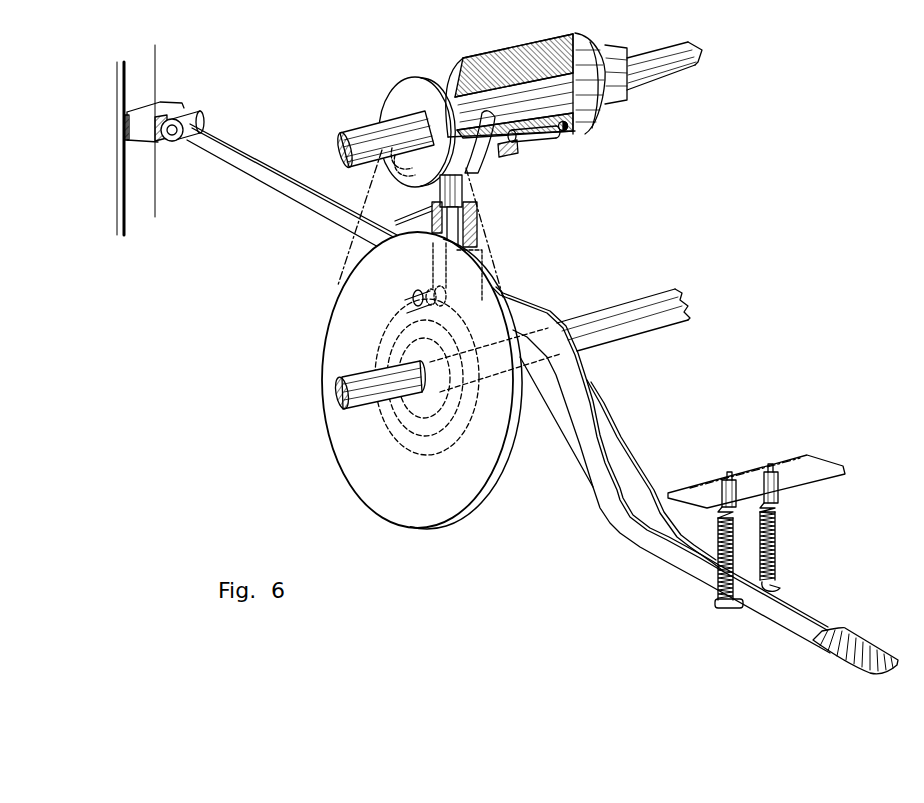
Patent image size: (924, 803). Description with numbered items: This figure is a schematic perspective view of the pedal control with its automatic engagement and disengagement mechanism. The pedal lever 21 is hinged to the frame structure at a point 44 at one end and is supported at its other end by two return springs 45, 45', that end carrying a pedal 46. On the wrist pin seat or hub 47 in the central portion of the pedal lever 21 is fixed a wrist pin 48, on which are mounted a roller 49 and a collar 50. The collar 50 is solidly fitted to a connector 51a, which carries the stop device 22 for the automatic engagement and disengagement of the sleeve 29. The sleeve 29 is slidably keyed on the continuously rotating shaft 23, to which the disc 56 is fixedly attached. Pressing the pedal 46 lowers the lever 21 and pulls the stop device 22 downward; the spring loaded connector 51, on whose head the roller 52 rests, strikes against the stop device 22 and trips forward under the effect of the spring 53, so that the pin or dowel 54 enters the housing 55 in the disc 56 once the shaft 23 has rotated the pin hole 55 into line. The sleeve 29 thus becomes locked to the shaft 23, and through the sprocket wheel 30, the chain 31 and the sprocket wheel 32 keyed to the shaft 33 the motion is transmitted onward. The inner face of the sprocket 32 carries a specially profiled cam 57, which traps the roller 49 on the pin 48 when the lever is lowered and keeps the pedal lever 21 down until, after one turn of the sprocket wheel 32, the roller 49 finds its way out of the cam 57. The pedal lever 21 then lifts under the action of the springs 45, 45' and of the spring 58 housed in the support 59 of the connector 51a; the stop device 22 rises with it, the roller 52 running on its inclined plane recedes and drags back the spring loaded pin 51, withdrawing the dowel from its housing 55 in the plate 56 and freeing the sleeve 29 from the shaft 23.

The pedal lever 21 is at (526, 323).
The stop device 22 is at (473, 176).
The shaft 23 is at (655, 67).
The sleeve 29 is at (465, 60).
The sprocket wheel 30 is at (397, 96).
The chain 31 is at (414, 292).
The sprocket wheel 32 is at (350, 303).
The shaft 33 is at (372, 375).
The hinge point 44 is at (197, 108).
The return spring 45 is at (769, 540).
The return spring 45' is at (781, 527).
The pedal 46 is at (845, 618).
The wrist pin seat or hub 47 is at (497, 265).
The wrist pin 48 is at (400, 290).
The roller 49 is at (428, 296).
The collar 50 is at (500, 274).
The spring loaded connector 51 is at (412, 145).
The connector 51a is at (482, 234).
The roller 52 is at (403, 163).
The spring 53 is at (510, 150).
The pin or dowel 54 is at (547, 140).
The housing 55 is at (570, 135).
The disc 56 is at (607, 97).
The cam 57 is at (382, 343).
The spring 58 is at (480, 226).
The support 59 is at (483, 212).